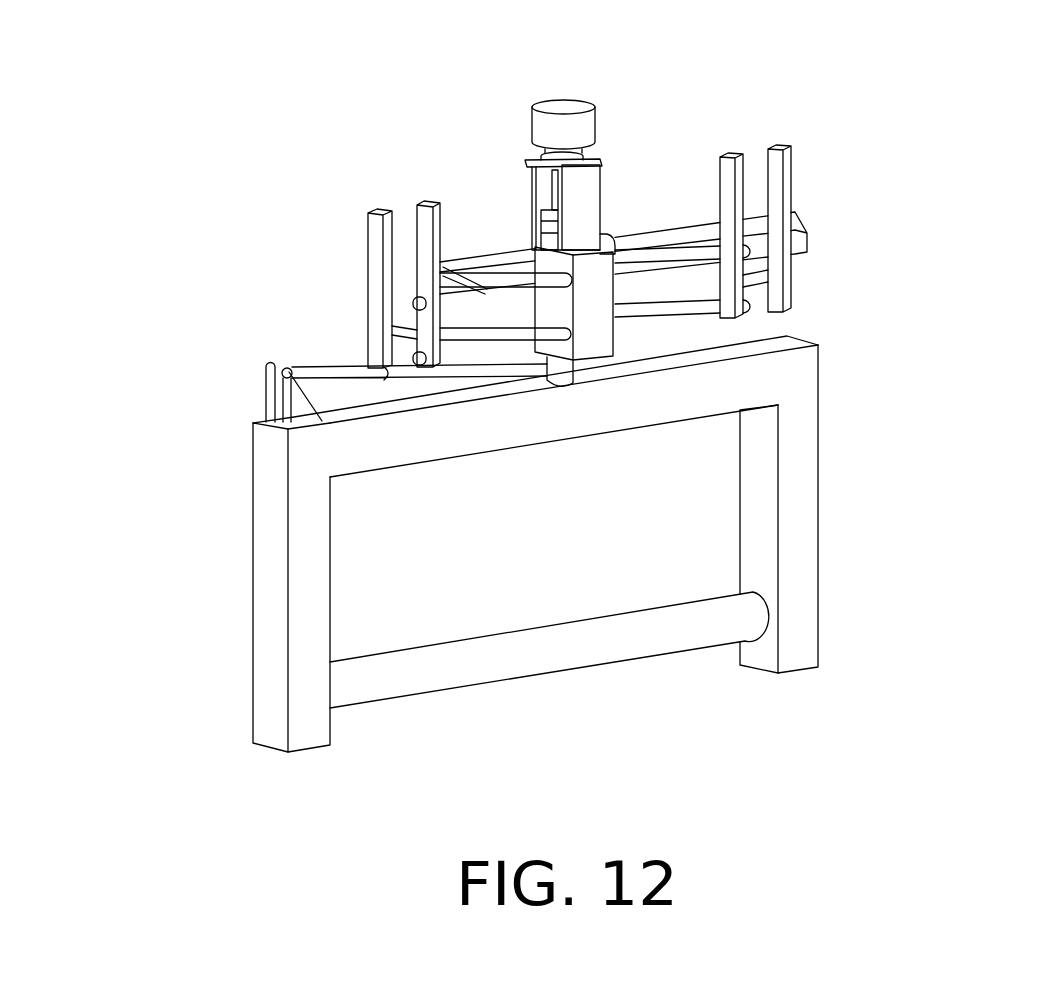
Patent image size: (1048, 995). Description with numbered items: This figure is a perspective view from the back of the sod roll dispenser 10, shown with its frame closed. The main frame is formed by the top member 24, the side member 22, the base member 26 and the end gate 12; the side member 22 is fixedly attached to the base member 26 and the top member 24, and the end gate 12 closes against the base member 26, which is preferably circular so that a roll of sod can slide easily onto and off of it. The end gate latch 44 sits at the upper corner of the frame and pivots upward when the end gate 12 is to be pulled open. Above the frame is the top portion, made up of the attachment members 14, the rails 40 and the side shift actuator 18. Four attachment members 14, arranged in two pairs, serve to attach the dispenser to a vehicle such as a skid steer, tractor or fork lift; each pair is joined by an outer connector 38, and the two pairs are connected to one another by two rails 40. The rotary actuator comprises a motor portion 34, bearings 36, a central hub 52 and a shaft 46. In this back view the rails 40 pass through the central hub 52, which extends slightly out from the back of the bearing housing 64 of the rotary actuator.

The sod roll dispenser 10 is at (270, 246).
The end gate 12 is at (272, 607).
The attachment members 14 is at (775, 200).
The side shift actuator 18 is at (660, 238).
The side member 22 is at (795, 535).
The top member 24 is at (803, 372).
The base member 26 is at (595, 638).
The motor portion 34 is at (567, 132).
The bearings 36 is at (552, 192).
The outer connector 38 is at (700, 304).
The rails 40 is at (775, 275).
The end gate latch 44 is at (296, 407).
The shaft 46 is at (556, 376).
The central hub 52 is at (585, 282).
The bearing housing 64 is at (577, 207).